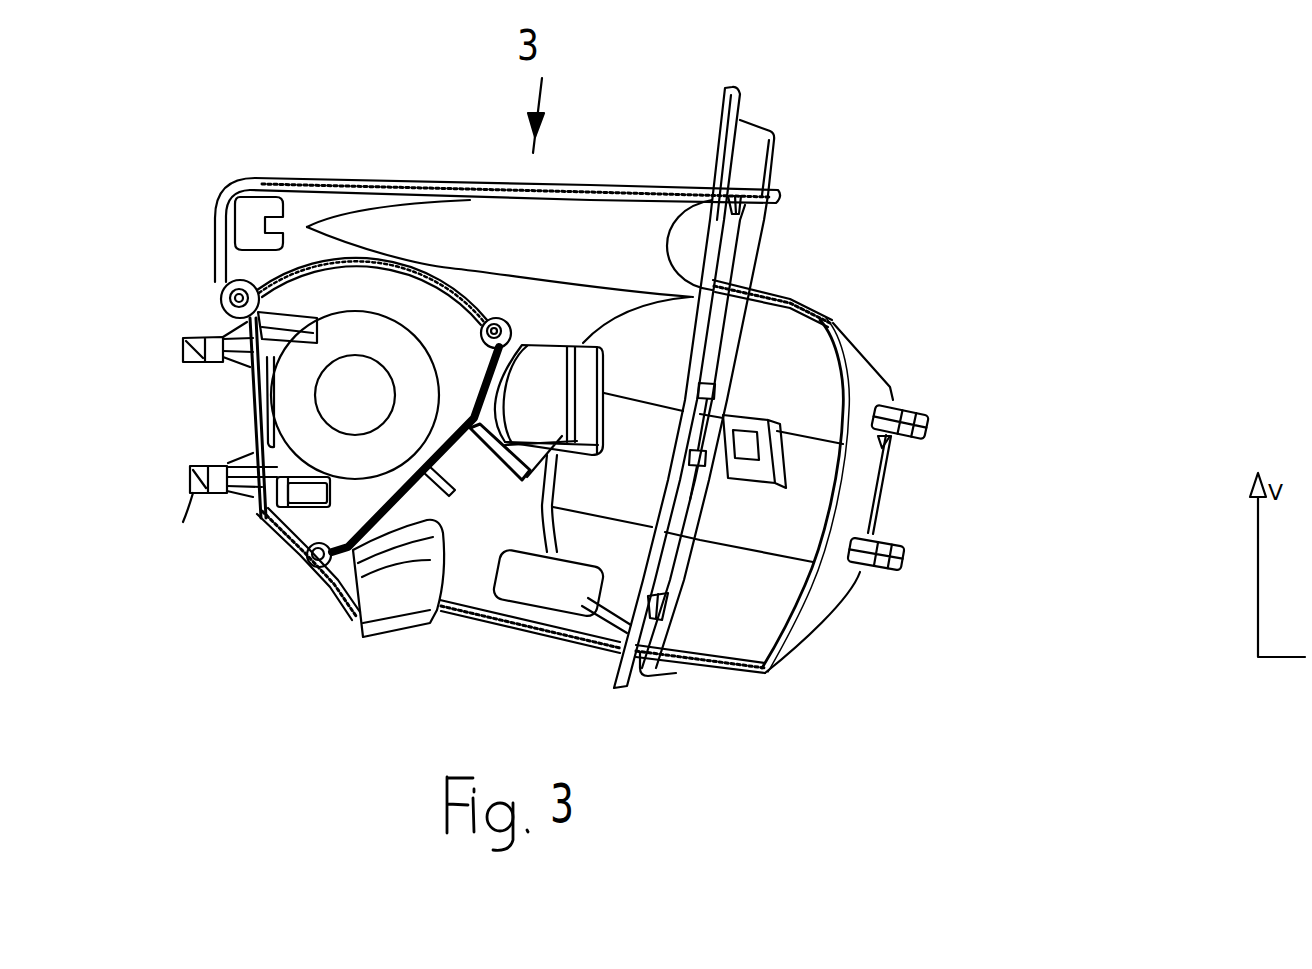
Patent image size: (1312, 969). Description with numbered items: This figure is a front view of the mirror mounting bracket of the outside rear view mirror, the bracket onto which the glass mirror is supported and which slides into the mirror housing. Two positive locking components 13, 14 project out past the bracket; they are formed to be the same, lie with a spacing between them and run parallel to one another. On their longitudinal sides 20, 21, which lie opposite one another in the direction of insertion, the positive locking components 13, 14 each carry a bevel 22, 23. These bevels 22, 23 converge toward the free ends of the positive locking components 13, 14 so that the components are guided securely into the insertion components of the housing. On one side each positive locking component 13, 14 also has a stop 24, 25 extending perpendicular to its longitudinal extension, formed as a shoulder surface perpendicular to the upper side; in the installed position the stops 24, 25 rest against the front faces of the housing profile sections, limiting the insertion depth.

The longitudinal side 20 is at (186, 337).
The positive locking component 13 is at (187, 337).
The bevel 22 is at (182, 346).
The stop 24 is at (197, 366).
The positive locking component 14 is at (197, 497).
The stop 25 is at (193, 461).
The longitudinal side 21 is at (202, 494).
The bevel 23 is at (199, 494).